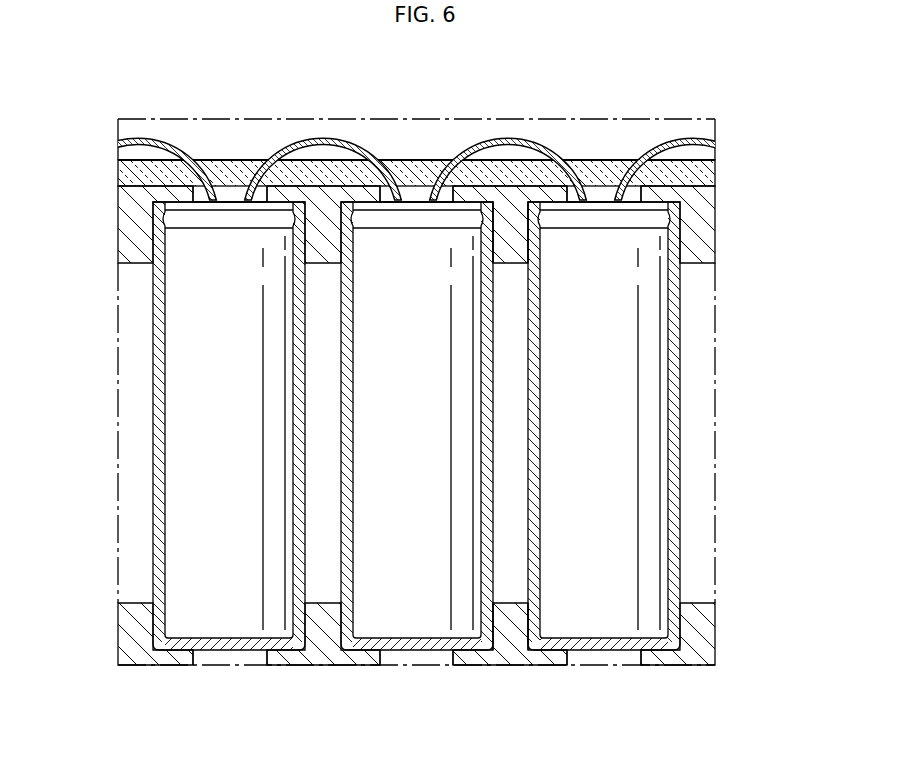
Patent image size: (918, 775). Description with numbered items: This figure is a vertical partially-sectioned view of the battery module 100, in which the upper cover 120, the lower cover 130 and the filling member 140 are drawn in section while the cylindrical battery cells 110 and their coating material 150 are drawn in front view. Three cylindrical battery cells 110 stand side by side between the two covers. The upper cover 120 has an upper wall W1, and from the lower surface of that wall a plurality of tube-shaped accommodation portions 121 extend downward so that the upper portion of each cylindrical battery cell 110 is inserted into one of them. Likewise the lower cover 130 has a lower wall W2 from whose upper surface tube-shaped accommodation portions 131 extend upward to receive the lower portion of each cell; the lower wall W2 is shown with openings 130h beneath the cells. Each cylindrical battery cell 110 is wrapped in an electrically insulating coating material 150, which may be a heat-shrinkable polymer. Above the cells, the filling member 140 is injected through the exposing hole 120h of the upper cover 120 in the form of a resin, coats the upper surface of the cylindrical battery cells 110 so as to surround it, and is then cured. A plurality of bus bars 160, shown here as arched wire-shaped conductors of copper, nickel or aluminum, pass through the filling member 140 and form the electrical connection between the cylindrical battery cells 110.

The battery module 100 is at (165, 132).
The cylindrical battery cell 110 is at (144, 374).
The upper cover 120 is at (726, 213).
The exposing hole 120h is at (425, 194).
The accommodation portion 121 is at (510, 263).
The lower cover 130 is at (726, 632).
The second holder opening 130h is at (431, 661).
The accommodation portion 131 is at (510, 602).
The filling member 140 is at (602, 160).
The coating material 150 is at (155, 480).
The bus bar 160 is at (283, 145).
The upper wall W1 is at (700, 180).
The lower wall W2 is at (682, 666).